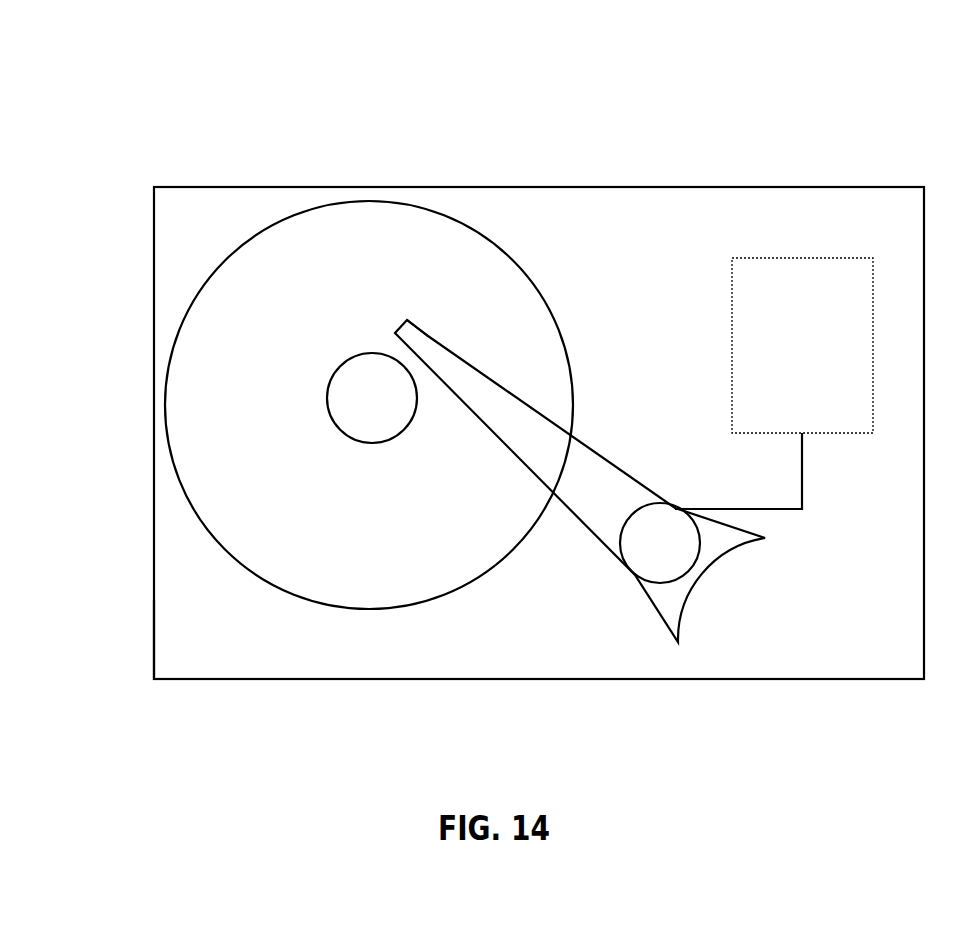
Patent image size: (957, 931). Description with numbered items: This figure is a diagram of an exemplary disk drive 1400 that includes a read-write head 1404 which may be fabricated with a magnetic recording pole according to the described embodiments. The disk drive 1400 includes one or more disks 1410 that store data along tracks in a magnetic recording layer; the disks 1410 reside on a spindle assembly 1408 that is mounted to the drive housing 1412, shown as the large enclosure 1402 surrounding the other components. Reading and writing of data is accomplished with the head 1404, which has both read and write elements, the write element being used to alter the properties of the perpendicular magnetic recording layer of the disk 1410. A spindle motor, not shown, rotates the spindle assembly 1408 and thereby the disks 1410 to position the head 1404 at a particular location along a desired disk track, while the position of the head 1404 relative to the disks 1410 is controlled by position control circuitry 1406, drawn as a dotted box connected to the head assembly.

The disk drive 1400 is at (548, 68).
The housing 1402 is at (684, 185).
The head 1404 is at (428, 337).
The position control circuitry 1406 is at (776, 357).
The spindle assembly 1408 is at (398, 409).
The disks 1410 is at (283, 592).
The drive housing 1412 is at (222, 682).